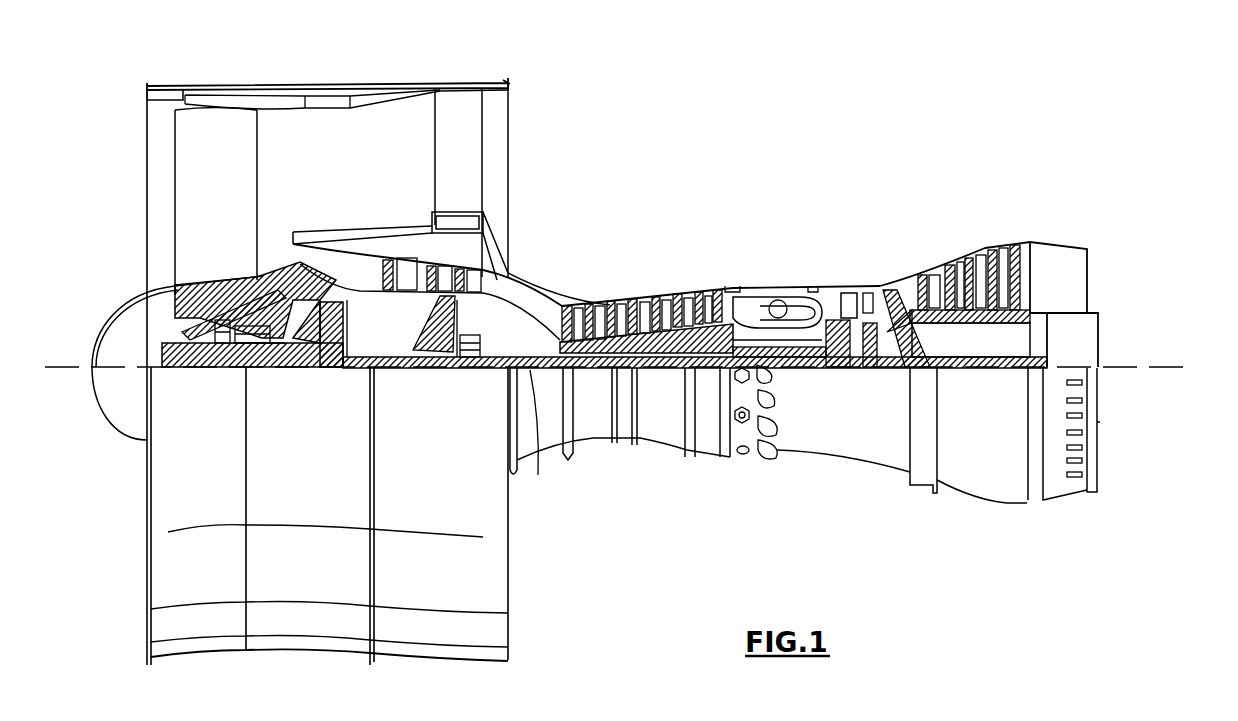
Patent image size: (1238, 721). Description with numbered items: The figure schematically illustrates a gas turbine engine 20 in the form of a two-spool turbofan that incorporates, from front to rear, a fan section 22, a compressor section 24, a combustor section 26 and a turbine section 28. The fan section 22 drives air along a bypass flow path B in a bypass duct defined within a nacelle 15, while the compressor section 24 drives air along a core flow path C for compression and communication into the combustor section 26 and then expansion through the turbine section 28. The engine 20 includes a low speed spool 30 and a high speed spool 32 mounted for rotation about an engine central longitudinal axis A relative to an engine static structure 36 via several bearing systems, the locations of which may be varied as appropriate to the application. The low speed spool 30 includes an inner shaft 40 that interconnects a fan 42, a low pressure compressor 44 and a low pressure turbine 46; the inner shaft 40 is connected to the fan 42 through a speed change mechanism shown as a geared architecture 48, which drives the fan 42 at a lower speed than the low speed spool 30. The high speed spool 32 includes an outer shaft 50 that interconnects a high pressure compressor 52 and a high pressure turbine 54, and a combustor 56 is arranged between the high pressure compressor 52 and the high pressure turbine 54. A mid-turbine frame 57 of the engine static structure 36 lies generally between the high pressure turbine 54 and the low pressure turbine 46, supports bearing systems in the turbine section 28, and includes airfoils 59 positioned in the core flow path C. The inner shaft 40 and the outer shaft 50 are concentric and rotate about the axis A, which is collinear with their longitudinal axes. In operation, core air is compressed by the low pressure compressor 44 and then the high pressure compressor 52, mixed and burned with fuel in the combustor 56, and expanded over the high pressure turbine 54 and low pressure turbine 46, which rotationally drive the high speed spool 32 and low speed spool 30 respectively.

The nacelle 15 is at (328, 88).
The gas turbine engine 20 is at (793, 126).
The fan section 22 is at (258, 72).
The compressor section 24 is at (476, 260).
The combustor section 26 is at (775, 280).
The turbine section 28 is at (962, 265).
The low speed spool 30 is at (667, 382).
The high speed spool 32 is at (708, 330).
The engine static structure 36 is at (708, 466).
The inner shaft 40 is at (531, 372).
The fan 42 is at (232, 214).
The low pressure compressor 44 is at (432, 272).
The low pressure turbine 46 is at (983, 245).
The geared architecture 48 is at (335, 352).
The outer shaft 50 is at (790, 360).
The high pressure compressor 52 is at (640, 330).
The high pressure turbine 54 is at (849, 290).
The combustor 56 is at (782, 305).
The mid-turbine frame 57 is at (894, 270).
The airfoils 59 is at (900, 335).
The engine central longitudinal axis A is at (1180, 367).
The bypass flow path B is at (284, 159).
The core flow path C is at (326, 263).